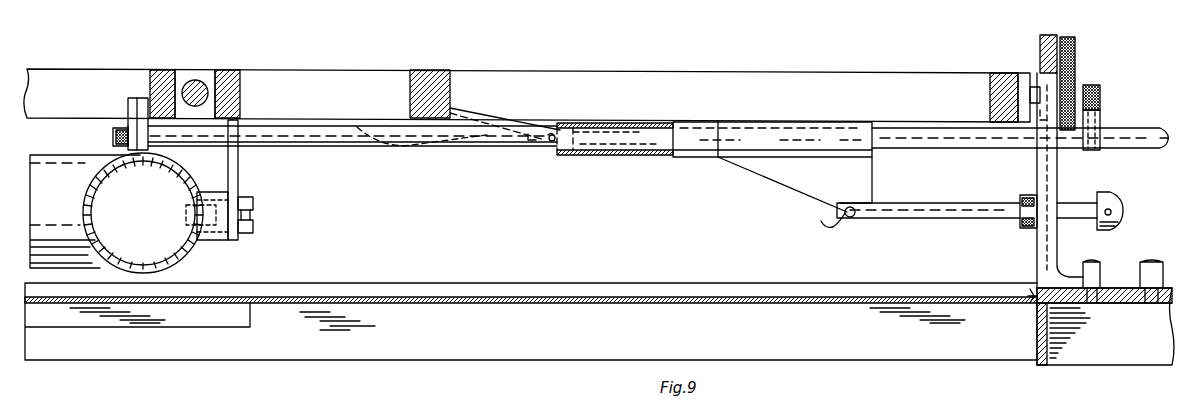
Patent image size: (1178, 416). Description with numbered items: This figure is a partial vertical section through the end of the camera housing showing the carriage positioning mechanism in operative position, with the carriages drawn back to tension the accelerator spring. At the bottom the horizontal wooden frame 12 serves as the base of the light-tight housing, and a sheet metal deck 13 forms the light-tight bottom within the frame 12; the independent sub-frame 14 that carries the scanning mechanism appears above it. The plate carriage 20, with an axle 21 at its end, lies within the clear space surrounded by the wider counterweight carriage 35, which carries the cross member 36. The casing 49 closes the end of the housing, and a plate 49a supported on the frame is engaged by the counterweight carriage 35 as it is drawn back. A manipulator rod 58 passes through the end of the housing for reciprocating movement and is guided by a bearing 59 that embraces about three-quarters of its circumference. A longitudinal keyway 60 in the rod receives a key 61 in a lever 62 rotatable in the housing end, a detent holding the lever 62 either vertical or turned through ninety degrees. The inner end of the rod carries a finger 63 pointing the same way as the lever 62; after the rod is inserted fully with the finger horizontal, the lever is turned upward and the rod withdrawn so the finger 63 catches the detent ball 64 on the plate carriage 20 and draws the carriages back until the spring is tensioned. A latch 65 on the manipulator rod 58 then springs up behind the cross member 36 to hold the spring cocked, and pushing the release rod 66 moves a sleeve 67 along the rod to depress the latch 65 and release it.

The horizontal wooden frame 12 is at (531, 321).
The sheet metal deck 13 is at (818, 305).
The sub-frame 14 is at (179, 251).
The plate carriage 20 is at (221, 70).
The axle 21 is at (197, 106).
The counterweight carriage 35 is at (521, 140).
The cross member 36 is at (432, 82).
The casing 49 is at (1040, 50).
The plate 49a is at (1036, 178).
The manipulator rod 58 is at (377, 148).
The bearing 59 is at (238, 174).
The longitudinal keyway 60 is at (1144, 130).
The key 61 is at (1090, 125).
The lever 62 is at (1076, 55).
The finger 63 is at (133, 107).
The detent ball 64 is at (146, 100).
The latch 65 is at (472, 118).
The release rod 66 is at (963, 221).
The sleeve 67 is at (660, 154).